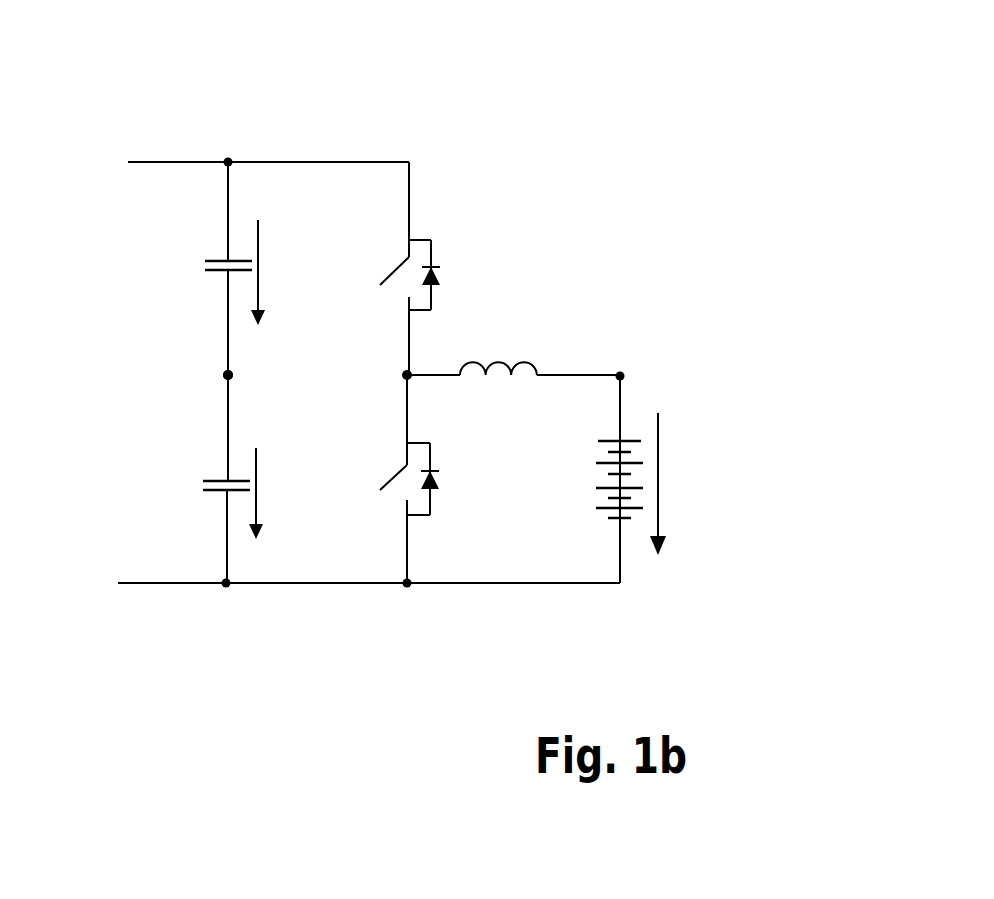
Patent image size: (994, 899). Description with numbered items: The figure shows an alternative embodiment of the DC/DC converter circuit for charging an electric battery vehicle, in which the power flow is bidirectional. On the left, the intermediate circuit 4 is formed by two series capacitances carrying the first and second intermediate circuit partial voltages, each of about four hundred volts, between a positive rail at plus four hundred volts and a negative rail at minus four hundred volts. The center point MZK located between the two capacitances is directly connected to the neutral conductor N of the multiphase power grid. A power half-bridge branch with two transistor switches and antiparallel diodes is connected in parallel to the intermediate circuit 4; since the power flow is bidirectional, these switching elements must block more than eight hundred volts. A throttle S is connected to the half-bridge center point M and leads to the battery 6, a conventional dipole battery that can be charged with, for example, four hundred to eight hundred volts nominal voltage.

The intermediate circuit 4 is at (236, 92).
The battery 6 is at (633, 322).
The half-bridge center point M is at (408, 375).
The throttle S is at (515, 363).
The center point of the intermediate circuit MZK is at (227, 375).
The neutral conductor N is at (227, 376).